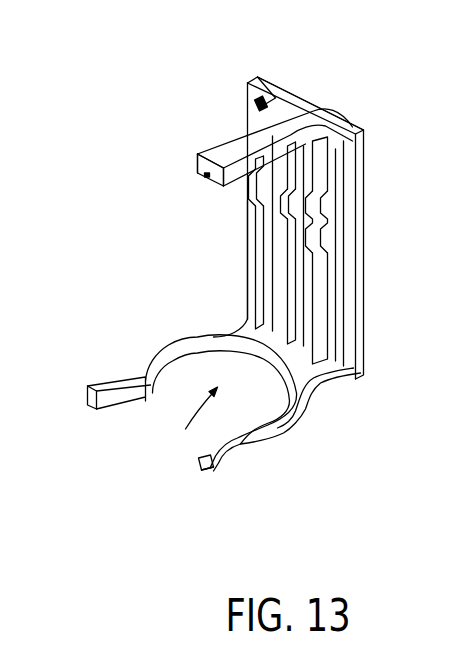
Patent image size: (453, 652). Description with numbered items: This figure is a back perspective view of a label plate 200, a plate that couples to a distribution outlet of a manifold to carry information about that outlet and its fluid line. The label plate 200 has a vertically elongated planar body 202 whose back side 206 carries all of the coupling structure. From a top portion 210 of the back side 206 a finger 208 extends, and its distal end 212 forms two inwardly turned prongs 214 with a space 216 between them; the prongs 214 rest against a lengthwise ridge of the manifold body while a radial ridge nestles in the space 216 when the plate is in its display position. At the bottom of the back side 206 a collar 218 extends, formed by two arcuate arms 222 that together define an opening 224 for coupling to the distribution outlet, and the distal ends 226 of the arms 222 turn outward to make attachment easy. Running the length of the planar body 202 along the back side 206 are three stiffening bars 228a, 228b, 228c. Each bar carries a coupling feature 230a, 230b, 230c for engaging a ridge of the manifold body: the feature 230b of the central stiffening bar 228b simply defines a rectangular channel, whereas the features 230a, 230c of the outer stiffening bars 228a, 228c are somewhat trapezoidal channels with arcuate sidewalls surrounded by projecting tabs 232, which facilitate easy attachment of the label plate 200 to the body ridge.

The label plate 200 is at (88, 86).
The planar body 202 is at (248, 280).
The back side 206 is at (348, 170).
The finger 208 is at (228, 140).
The top portion 210 is at (313, 110).
The distal end 212 is at (195, 151).
The prongs 214 is at (200, 169).
The space 216 is at (205, 176).
The collar 218 is at (204, 472).
The arcuate arms 222 is at (153, 351).
The opening 224 is at (184, 437).
The distal ends 226 is at (105, 400).
The stiffening bar 228a is at (258, 296).
The central stiffening bar 228b is at (293, 330).
The stiffening bar 228c is at (323, 353).
The coupling feature 230a is at (262, 170).
The coupling feature 230b is at (287, 190).
The coupling feature 230c is at (327, 254).
The projecting tabs 232 is at (250, 200).